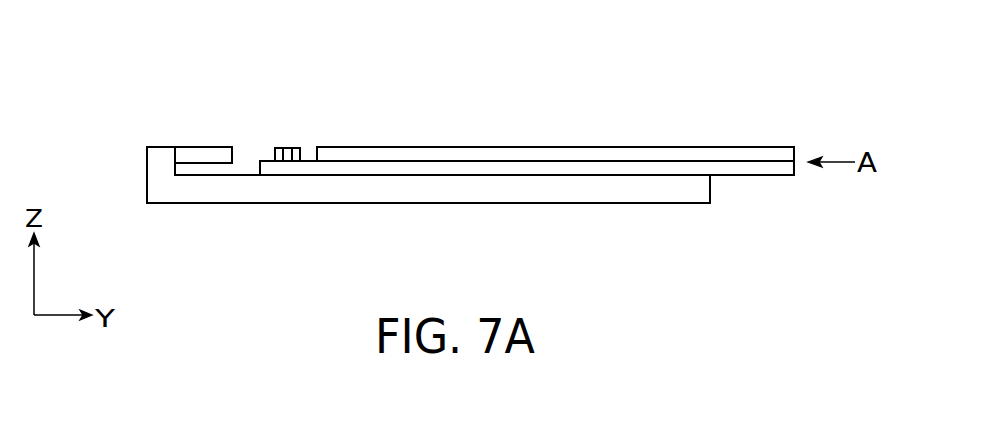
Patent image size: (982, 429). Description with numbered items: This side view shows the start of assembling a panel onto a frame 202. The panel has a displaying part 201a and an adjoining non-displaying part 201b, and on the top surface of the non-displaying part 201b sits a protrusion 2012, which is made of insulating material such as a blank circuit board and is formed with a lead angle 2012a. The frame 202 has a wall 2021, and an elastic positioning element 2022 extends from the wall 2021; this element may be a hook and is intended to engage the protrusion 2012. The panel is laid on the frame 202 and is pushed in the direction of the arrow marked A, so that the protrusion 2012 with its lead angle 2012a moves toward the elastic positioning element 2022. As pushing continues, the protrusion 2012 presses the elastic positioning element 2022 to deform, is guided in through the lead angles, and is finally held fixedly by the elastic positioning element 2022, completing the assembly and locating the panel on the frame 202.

The frame 202 is at (457, 190).
The wall 2021 is at (163, 163).
The elastic positioning element 2022 is at (203, 153).
The displaying part 201a is at (640, 157).
The non-displaying part 201b is at (309, 165).
The protrusion 2012 is at (295, 148).
The lead angle 2012a is at (280, 148).